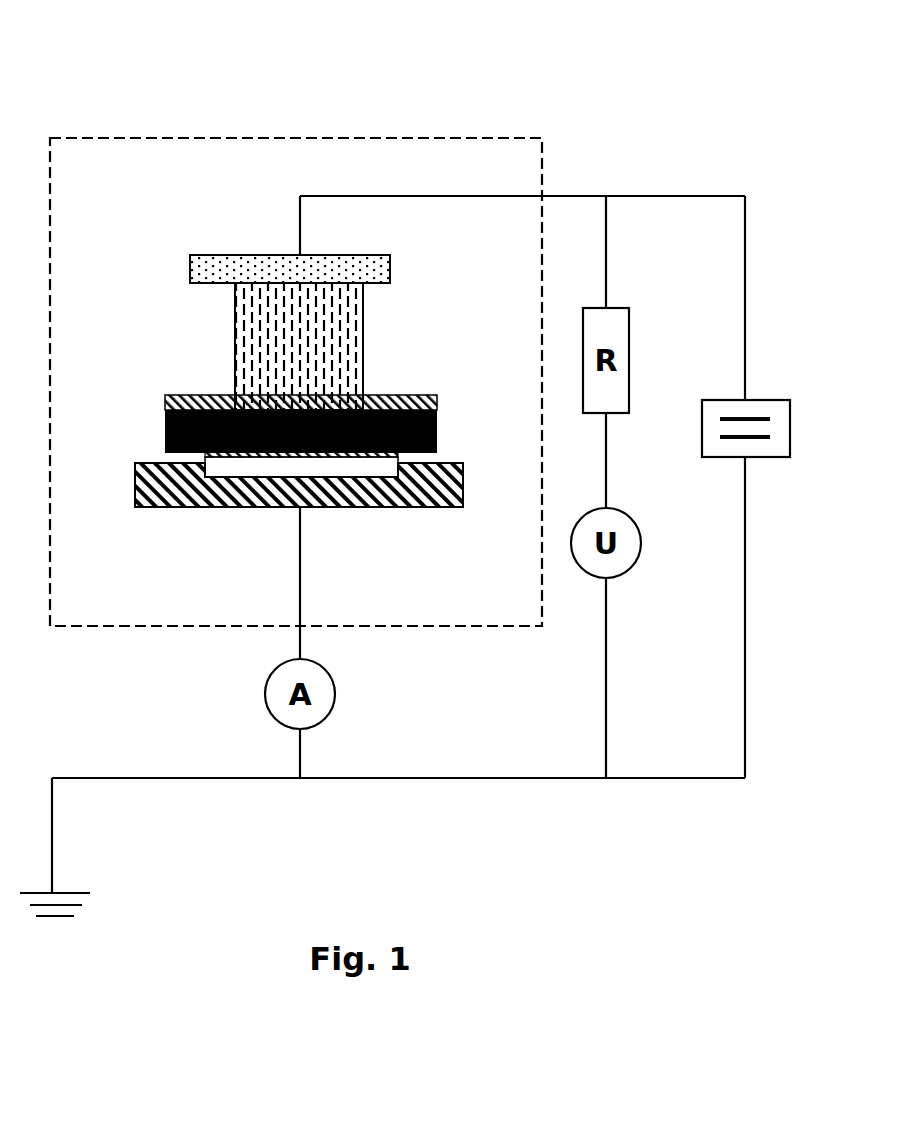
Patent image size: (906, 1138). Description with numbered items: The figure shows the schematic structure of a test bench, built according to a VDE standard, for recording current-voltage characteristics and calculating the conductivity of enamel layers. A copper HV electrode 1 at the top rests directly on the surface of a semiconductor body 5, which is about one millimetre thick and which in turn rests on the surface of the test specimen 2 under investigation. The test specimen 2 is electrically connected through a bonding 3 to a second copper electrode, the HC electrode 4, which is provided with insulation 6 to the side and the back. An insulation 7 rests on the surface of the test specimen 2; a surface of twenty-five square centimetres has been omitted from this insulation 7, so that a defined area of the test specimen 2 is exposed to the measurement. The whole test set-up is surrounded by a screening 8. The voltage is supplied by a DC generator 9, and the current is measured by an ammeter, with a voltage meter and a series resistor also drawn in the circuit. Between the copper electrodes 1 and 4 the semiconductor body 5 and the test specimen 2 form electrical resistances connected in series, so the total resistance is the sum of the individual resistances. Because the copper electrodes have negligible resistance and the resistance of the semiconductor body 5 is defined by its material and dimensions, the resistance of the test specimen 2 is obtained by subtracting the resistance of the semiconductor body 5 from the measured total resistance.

The HV electrode 1 is at (263, 250).
The test specimen 2 is at (163, 418).
The bonding 3 is at (223, 457).
The HC electrode 4 is at (358, 478).
The semiconductor body 5 is at (240, 325).
The insulation 6 is at (448, 460).
The insulation 7 is at (415, 393).
The screening 8 is at (133, 137).
The DC generator 9 is at (725, 397).